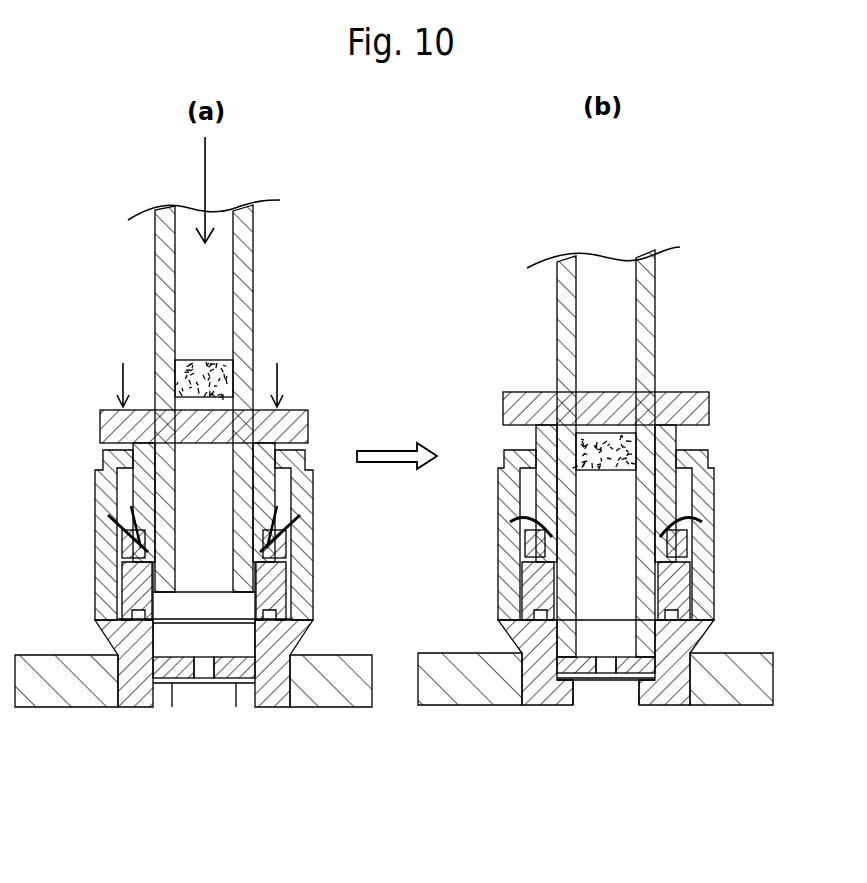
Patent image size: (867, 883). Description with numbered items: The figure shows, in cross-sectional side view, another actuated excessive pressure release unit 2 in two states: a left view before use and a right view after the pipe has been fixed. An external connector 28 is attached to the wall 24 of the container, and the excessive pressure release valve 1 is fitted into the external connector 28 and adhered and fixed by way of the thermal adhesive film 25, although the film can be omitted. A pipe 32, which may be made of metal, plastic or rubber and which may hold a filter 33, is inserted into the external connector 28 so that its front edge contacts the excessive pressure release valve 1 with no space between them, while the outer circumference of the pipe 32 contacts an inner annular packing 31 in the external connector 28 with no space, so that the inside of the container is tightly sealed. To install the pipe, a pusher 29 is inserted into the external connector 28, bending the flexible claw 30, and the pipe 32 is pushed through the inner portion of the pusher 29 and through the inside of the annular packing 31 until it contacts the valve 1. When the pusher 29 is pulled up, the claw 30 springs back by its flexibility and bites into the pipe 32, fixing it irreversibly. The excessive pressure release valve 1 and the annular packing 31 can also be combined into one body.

The excessive pressure release valve 1 is at (605, 645).
The excessive pressure release unit 2 is at (643, 727).
The wall of the container 24 is at (722, 665).
The thermal adhesive film 25 is at (583, 681).
The external connector 28 is at (498, 603).
The pusher 29 is at (520, 408).
The flexible claw 30 is at (150, 556).
The inner annular packing 31 is at (673, 582).
The pipe 32 is at (648, 308).
The filter 33 is at (593, 443).